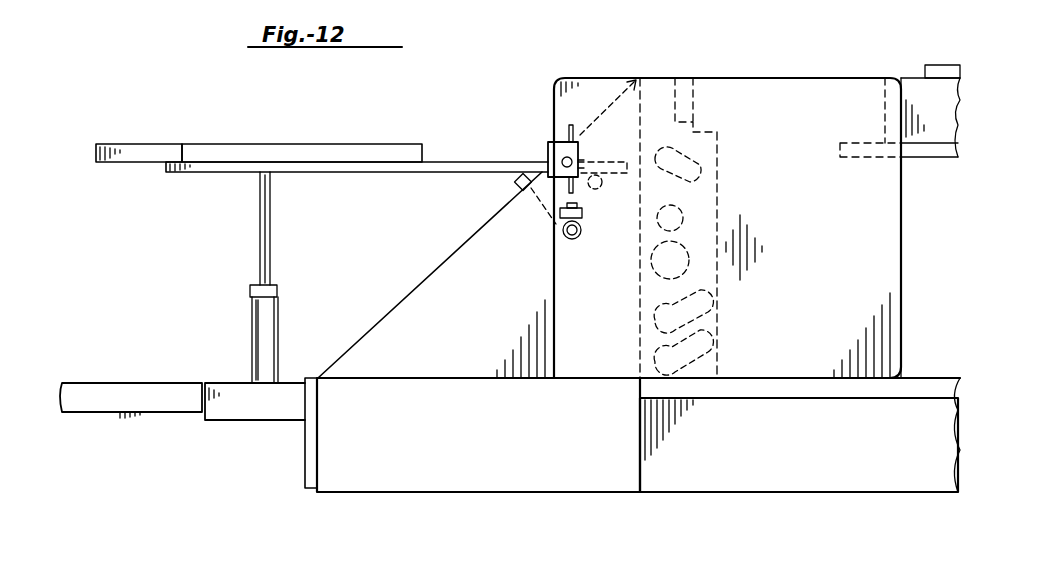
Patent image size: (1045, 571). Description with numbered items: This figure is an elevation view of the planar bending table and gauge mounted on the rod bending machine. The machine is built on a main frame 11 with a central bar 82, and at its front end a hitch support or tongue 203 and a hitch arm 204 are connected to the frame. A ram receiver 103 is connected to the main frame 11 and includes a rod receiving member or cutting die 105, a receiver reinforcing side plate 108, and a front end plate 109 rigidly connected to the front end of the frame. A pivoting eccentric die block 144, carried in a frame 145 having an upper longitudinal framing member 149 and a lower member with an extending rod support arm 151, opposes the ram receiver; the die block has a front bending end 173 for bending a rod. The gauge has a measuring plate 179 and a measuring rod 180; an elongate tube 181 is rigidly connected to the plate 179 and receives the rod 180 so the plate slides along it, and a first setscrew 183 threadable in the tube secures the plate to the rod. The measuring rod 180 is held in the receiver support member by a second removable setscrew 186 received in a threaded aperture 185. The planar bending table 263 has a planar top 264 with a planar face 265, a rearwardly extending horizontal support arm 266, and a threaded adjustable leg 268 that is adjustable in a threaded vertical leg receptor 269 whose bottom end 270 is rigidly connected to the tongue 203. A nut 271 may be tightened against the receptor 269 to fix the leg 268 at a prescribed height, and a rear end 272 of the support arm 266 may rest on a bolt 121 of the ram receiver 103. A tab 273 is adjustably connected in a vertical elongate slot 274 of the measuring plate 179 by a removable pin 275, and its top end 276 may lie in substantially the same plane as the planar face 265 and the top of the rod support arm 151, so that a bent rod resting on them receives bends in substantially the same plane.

The main frame 11 is at (918, 372).
The central bar 82 is at (820, 470).
The ram receiver 103 is at (443, 303).
The rod receiving member 105 is at (622, 74).
The receiver reinforcing side plate 108 is at (490, 470).
The front end plate 109 is at (305, 452).
The bolt 121 is at (597, 190).
The die block 144 is at (910, 87).
The frame 145 is at (922, 160).
The upper longitudinal framing member 149 is at (940, 64).
The rod support arm 151 is at (845, 157).
The front bending end 173 is at (885, 107).
The measuring plate 179 is at (745, 100).
The measuring rod 180 is at (553, 258).
The elongate tube 181 is at (578, 242).
The first setscrew 183 is at (582, 236).
The threaded aperture 185 is at (531, 188).
The second removable setscrew 186 is at (517, 183).
The hitch support 203 is at (245, 412).
The hitch arm 204 is at (85, 382).
The planar bending table 263 is at (150, 144).
The planar top 264 is at (272, 152).
The planar face 265 is at (345, 144).
The support arm 266 is at (360, 173).
The threaded adjustable leg 268 is at (271, 240).
The threaded vertical leg receptor 269 is at (278, 330).
The bottom end 270 is at (256, 365).
The nut 271 is at (250, 290).
The rear end 272 is at (600, 165).
The tab 273 is at (548, 160).
The vertical elongate slot 274 is at (568, 126).
The removable pin 275 is at (604, 114).
The top end 276 is at (565, 145).